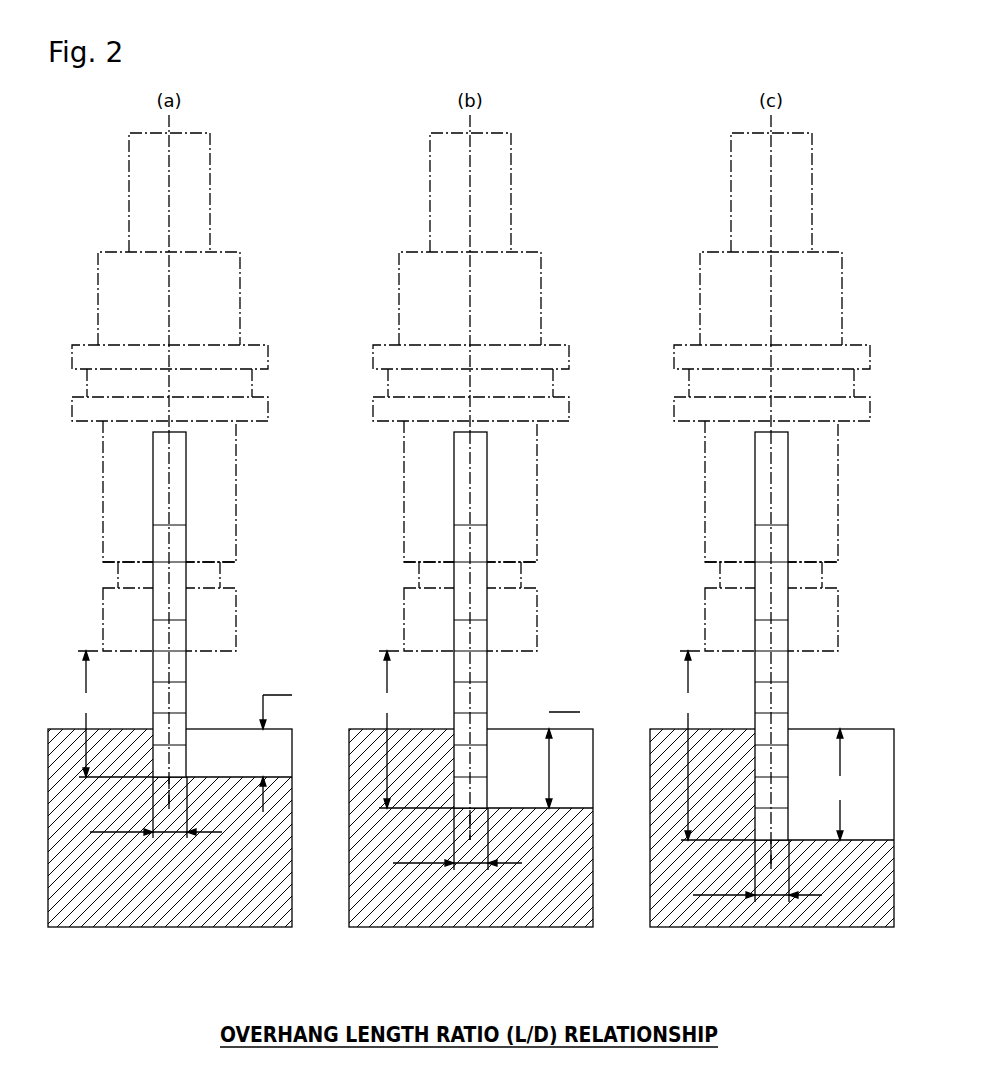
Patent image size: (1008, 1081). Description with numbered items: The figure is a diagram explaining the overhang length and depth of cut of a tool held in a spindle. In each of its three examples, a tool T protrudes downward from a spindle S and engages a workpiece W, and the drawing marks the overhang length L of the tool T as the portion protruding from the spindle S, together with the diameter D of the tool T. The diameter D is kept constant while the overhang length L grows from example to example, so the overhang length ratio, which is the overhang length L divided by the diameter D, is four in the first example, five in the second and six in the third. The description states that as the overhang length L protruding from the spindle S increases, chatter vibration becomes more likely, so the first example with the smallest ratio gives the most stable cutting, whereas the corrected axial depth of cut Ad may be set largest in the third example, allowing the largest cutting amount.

The spindle S is at (882, 597).
The tool T is at (825, 687).
The workpiece W is at (680, 960).
The overhang length L is at (389, 745).
The diameter D is at (456, 839).
The corrected axial depth of cut Ad is at (555, 756).